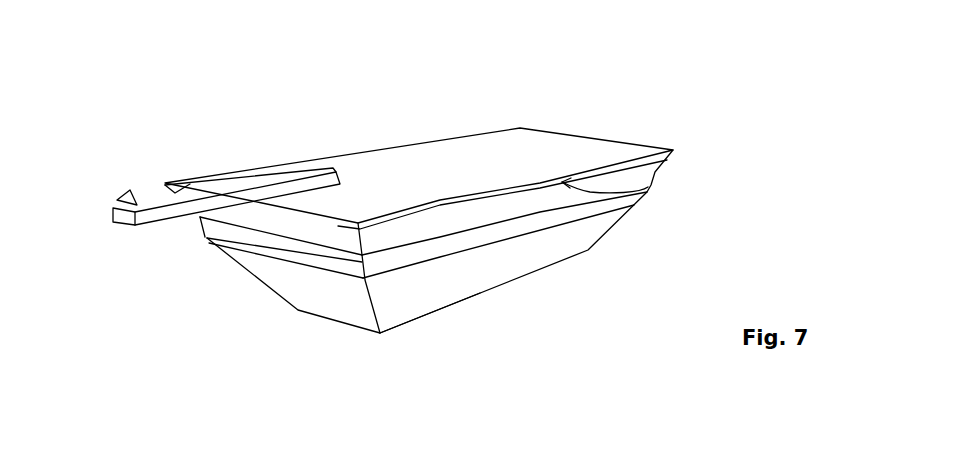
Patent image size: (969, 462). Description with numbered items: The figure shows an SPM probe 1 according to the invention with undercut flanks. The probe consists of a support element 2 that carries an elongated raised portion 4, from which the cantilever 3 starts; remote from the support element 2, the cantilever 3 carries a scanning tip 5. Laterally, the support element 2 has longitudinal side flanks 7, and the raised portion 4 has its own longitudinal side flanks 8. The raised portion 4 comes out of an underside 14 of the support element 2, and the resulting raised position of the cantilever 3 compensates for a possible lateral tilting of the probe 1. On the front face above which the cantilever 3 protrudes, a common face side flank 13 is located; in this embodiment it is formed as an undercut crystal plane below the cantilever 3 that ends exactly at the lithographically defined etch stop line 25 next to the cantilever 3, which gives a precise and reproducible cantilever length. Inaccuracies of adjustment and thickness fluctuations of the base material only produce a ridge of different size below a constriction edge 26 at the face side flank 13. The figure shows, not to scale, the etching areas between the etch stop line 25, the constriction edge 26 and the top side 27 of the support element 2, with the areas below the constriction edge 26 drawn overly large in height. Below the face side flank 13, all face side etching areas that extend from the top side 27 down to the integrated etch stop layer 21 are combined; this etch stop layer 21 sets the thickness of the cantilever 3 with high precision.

The SPM probe 1 is at (265, 85).
The support element 2 is at (430, 298).
The cantilever 3 is at (158, 200).
The raised portion 4 is at (397, 237).
The scanning tip 5 is at (118, 205).
The longitudinal side flanks 7 is at (495, 258).
The longitudinal side flanks 8 is at (543, 197).
The face side flank 13 is at (292, 225).
The underside 14 is at (461, 155).
The etch stop layer 21 is at (648, 187).
The etch stop line 25 is at (270, 212).
The constriction edge 26 is at (327, 250).
The top side 27 is at (462, 328).